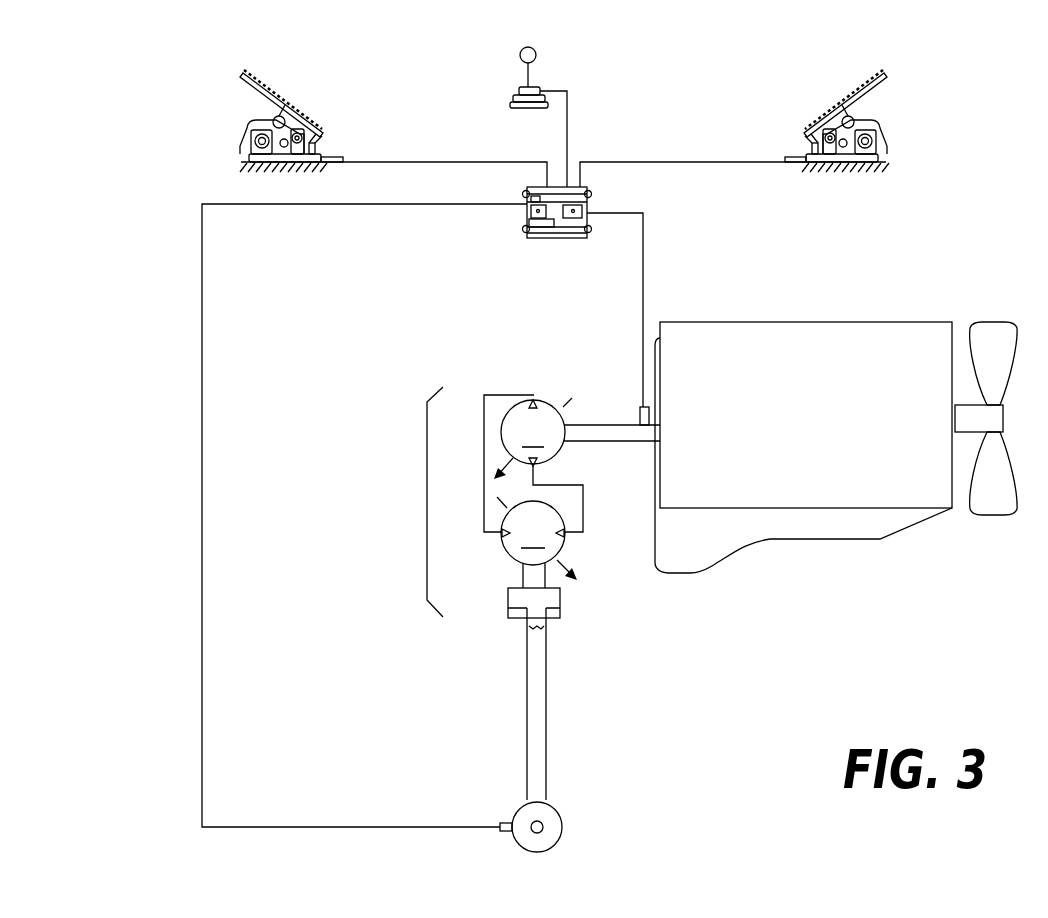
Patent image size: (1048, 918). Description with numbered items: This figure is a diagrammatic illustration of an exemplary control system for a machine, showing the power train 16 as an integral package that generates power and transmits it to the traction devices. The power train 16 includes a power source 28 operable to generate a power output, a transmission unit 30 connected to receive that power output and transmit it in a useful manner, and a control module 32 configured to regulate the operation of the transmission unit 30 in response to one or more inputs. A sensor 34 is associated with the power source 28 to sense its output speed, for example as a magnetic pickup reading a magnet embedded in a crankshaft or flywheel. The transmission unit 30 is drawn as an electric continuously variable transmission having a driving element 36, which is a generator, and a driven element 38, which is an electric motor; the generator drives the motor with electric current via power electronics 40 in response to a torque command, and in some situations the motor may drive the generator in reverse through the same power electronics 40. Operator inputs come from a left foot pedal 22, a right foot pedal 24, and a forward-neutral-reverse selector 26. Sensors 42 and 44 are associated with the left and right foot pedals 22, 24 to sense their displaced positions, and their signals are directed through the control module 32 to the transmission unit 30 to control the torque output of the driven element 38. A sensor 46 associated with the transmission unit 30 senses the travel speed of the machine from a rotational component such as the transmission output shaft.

The power train 16 is at (92, 156).
The left foot pedal 22 is at (279, 116).
The right foot pedal 24 is at (887, 73).
The forward-neutral-reverse (FNR) selector 26 is at (530, 47).
The power source 28 is at (786, 424).
The transmission unit 30 is at (427, 497).
The control module 32 is at (590, 203).
The sensor 34 is at (644, 407).
The driving element 36 is at (502, 440).
The driven element 38 is at (566, 522).
The power electronics 40 is at (497, 395).
The sensor 42 is at (336, 157).
The sensor 44 is at (792, 154).
The sensor 46 is at (508, 824).